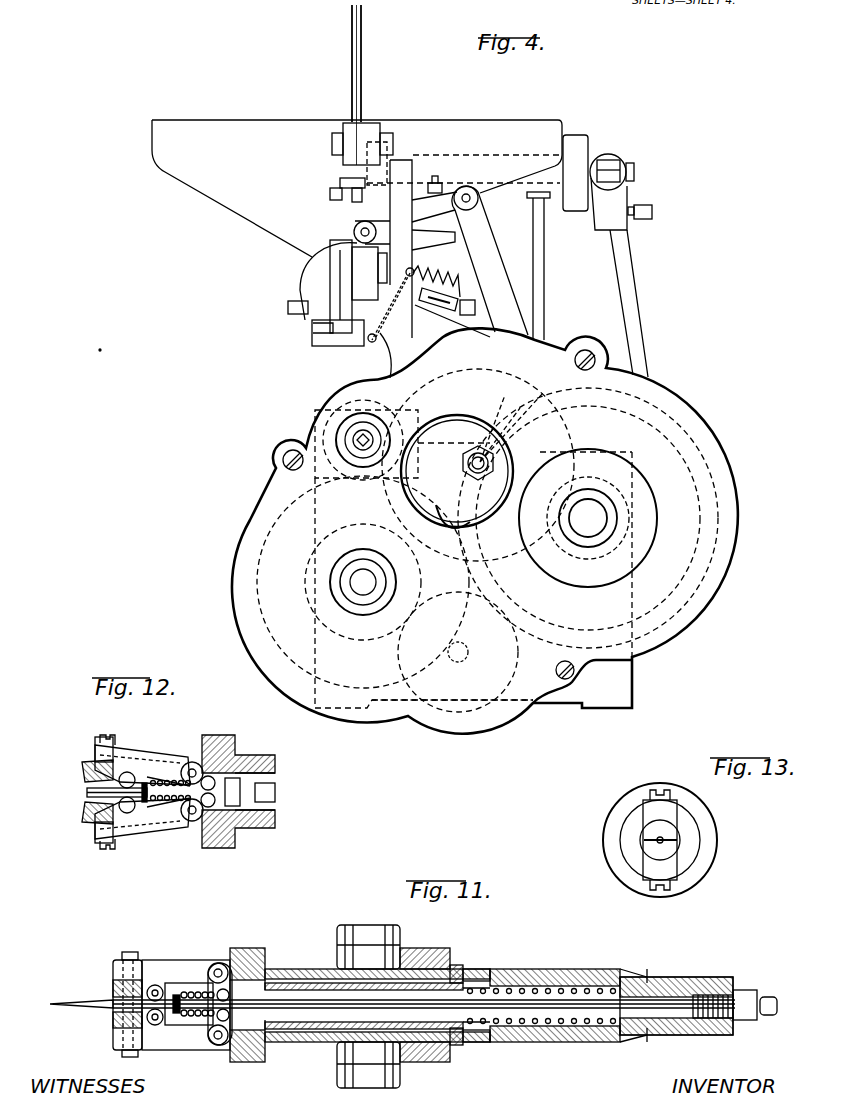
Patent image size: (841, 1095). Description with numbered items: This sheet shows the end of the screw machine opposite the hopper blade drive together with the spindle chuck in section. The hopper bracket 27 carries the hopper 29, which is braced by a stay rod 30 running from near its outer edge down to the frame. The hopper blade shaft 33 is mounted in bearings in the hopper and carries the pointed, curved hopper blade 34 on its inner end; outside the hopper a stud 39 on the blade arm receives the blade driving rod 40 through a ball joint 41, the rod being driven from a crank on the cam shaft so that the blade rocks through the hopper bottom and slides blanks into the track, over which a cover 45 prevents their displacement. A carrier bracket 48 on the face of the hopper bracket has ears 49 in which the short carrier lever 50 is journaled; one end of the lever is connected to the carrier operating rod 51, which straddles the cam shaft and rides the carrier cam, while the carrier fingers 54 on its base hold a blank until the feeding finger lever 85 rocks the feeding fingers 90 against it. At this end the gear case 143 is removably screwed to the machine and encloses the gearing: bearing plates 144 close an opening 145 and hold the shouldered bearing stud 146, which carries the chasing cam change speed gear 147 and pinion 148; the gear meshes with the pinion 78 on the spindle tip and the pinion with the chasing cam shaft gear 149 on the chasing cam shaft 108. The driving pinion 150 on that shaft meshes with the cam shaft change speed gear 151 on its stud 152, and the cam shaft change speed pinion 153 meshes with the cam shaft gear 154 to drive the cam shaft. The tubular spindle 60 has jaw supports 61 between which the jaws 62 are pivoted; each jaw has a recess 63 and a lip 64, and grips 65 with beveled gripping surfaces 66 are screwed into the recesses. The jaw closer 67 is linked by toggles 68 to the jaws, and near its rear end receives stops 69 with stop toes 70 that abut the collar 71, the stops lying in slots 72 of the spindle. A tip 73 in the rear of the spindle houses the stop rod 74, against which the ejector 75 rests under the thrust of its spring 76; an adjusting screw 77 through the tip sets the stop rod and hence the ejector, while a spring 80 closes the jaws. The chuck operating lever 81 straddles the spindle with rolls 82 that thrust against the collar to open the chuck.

In FIG. 4, the hopper bracket 27 is at (410, 173).
In FIG. 4, the hopper 29 is at (216, 192).
In FIG. 4, the stay rod 30 is at (548, 245).
In FIG. 4, the hopper blade shaft 33 is at (493, 155).
In FIG. 4, the hopper blade 34 is at (366, 93).
In FIG. 4, the stud 39 is at (634, 168).
In FIG. 4, the blade driving rod 40 is at (640, 273).
In FIG. 4, the ball joint 41 is at (617, 156).
In FIG. 4, the cover 45 is at (345, 275).
In FIG. 4, the carrier bracket 48 is at (372, 290).
In FIG. 4, the ears 49 is at (352, 234).
In FIG. 4, the carrier lever 50 is at (312, 318).
In FIG. 4, the carrier operating rod 51 is at (492, 246).
In FIG. 4, the carrier fingers 54 is at (325, 347).
In FIG. 4, the feeding finger lever 85 is at (450, 300).
In FIG. 4, the feeding fingers 90 is at (384, 323).
In FIG. 4, the chasing cam shaft 108 is at (363, 582).
In FIG. 4, the gear case 143 is at (688, 621).
In FIG. 4, the bearing plates 144 is at (488, 522).
In FIG. 4, the opening 145 is at (453, 417).
In FIG. 4, the shouldered bearing stud 146 is at (468, 465).
In FIG. 4, the chasing cam change speed gear 147 is at (493, 360).
In FIG. 4, the pinion 148 is at (552, 435).
In FIG. 4, the chasing cam shaft gear 149 is at (255, 577).
In FIG. 4, the driving pinion 150 is at (353, 642).
In FIG. 4, the cam shaft change speed gear 151 is at (462, 712).
In FIG. 4, the cam shaft change speed gear stud 152 is at (458, 652).
In FIG. 4, the cam shaft change speed pinion 153 is at (513, 655).
In FIG. 4, the cam shaft gear 154 is at (720, 518).
In FIG. 11, the spindle 60 is at (560, 970).
In FIG. 12, the jaw supports 61 is at (185, 750).
In FIG. 13, the jaw supports 61 is at (636, 860).
In FIG. 11, the jaw supports 61 is at (190, 983).
In FIG. 12, the jaws 62 is at (130, 747).
In FIG. 13, the jaws 62 is at (644, 812).
In FIG. 11, the jaws 62 is at (160, 963).
In FIG. 12, the recess 63 is at (97, 745).
In FIG. 13, the recess 63 is at (678, 866).
In FIG. 11, the recess 63 is at (113, 1030).
In FIG. 12, the lip 64 is at (97, 828).
In FIG. 11, the lip 64 is at (113, 980).
In FIG. 12, the grips 65 is at (92, 812).
In FIG. 13, the grips 65 is at (678, 830).
In FIG. 12, the beveled gripping surfaces 66 is at (92, 771).
In FIG. 11, the beveled gripping surfaces 66 is at (120, 1001).
In FIG. 12, the jaw closer 67 is at (278, 812).
In FIG. 11, the jaw closer 67 is at (293, 970).
In FIG. 12, the toggles 68 is at (192, 822).
In FIG. 11, the toggles 68 is at (222, 962).
In FIG. 11, the stops 69 is at (455, 963).
In FIG. 11, the stop toes 70 is at (466, 968).
In FIG. 11, the collar 71 is at (425, 950).
In FIG. 11, the slots 72 is at (490, 970).
In FIG. 11, the tip 73 is at (648, 980).
In FIG. 12, the stop rod 74 is at (277, 791).
In FIG. 11, the stop rod 74 is at (645, 1012).
In FIG. 12, the ejector 75 is at (172, 800).
In FIG. 11, the ejector 75 is at (176, 1015).
In FIG. 12, the spring 76 is at (150, 800).
In FIG. 11, the spring 76 is at (190, 1018).
In FIG. 11, the adjusting screw 77 is at (752, 990).
In FIG. 11, the pinion 78 is at (690, 977).
In FIG. 11, the spring 80 is at (528, 987).
In FIG. 11, the chuck operating lever 81 is at (368, 930).
In FIG. 11, the rolls 82 is at (340, 1062).